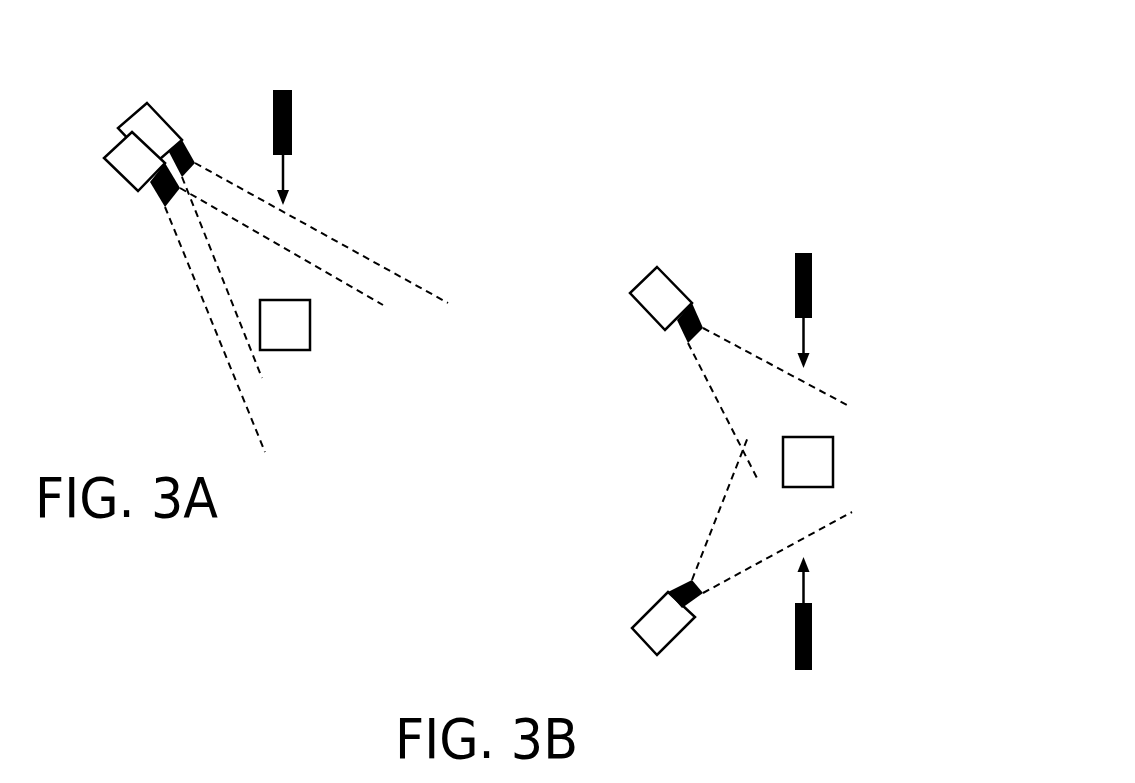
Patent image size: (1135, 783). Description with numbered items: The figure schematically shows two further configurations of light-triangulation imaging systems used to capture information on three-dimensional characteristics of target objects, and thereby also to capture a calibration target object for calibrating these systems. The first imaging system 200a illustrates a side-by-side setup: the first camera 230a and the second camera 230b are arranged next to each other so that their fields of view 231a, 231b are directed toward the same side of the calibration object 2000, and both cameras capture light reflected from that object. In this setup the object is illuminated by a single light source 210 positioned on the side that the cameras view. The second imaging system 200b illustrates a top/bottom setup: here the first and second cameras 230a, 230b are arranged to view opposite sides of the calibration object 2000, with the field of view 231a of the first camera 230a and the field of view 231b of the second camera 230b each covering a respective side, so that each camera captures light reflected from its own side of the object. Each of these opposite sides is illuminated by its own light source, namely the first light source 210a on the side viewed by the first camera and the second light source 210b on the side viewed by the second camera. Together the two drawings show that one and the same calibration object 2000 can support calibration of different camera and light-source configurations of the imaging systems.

In FIG. 3A, the imaging system 200a is at (448, 60).
In FIG. 3B, the imaging system 200b is at (908, 172).
In FIG. 3A, the first camera 230a is at (163, 120).
In FIG. 3B, the first camera 230a is at (653, 320).
In FIG. 3A, the second camera 230b is at (130, 190).
In FIG. 3B, the second camera 230b is at (643, 638).
In FIG. 3A, the field of view 231a is at (288, 290).
In FIG. 3B, the field of view 231a is at (788, 405).
In FIG. 3A, the field of view 231b is at (320, 413).
In FIG. 3B, the field of view 231b is at (787, 543).
In FIG. 3A, the light source 210 is at (292, 132).
In FIG. 3B, the first light source 210a is at (812, 295).
In FIG. 3B, the second light source 210b is at (812, 635).
In FIG. 3A, the calibration object 2000 is at (310, 330).
In FIG. 3B, the calibration object 2000 is at (833, 470).